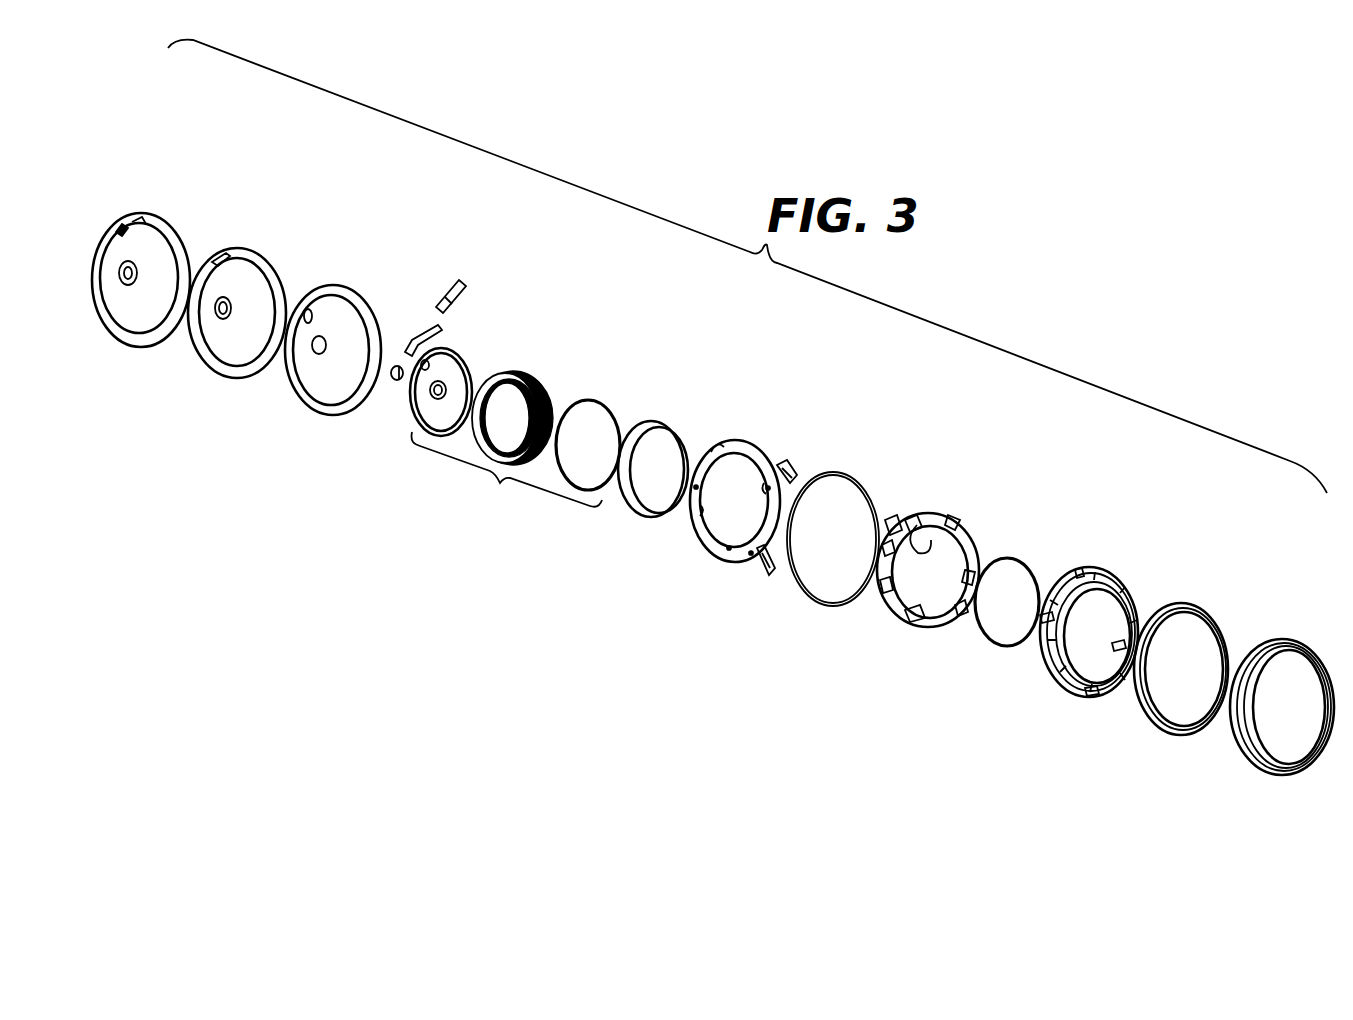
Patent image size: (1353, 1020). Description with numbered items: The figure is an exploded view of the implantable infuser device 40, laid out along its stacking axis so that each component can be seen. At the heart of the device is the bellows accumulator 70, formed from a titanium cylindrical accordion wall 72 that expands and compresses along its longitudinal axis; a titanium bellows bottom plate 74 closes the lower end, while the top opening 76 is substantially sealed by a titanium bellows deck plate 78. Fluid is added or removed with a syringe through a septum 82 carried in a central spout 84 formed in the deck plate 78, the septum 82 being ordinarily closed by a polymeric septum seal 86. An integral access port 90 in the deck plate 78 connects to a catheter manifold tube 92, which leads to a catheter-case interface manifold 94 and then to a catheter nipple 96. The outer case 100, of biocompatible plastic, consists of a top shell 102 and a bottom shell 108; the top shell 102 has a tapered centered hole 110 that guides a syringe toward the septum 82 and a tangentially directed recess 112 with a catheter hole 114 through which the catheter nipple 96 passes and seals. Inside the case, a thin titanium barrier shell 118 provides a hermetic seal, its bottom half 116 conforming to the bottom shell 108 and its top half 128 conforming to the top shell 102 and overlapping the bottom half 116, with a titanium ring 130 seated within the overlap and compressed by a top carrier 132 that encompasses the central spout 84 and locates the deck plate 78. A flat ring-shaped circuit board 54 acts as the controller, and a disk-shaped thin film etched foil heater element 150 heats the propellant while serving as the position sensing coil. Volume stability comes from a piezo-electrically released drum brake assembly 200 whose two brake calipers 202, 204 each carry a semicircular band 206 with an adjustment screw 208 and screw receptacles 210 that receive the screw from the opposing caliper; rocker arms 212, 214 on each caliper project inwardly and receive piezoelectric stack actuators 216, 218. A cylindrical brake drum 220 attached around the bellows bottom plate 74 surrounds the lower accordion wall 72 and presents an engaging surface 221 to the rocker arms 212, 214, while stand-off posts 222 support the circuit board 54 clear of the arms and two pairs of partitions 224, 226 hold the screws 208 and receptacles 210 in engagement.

The infuser device 40 is at (674, 324).
The circuit board 54 is at (703, 553).
The bellows accumulator 70 is at (498, 373).
The cylindrical accordion wall 72 is at (533, 372).
The bellows bottom plate 74 is at (598, 398).
The top opening 76 is at (93, 235).
The bellows deck plate 78 is at (474, 358).
The septum 82 is at (383, 310).
The central spout 84 is at (435, 395).
The septum seal 86 is at (392, 378).
The access port 90 is at (432, 348).
The catheter manifold tube 92 is at (392, 331).
The catheter-case interface manifold 94 is at (420, 327).
The catheter nipple 96 is at (463, 295).
The outer case 100 is at (127, 355).
The top shell 102 is at (183, 232).
The bottom shell 108 is at (1285, 640).
The tapered centered hole 110 is at (128, 258).
The tangentially directed recess 112 is at (140, 217).
The catheter hole 114 is at (122, 230).
The bottom half of thin barrier shell 116 is at (1213, 612).
The thin barrier shell 118 is at (265, 233).
The top half of thin barrier enclosure 128 is at (273, 270).
The titanium ring 130 is at (860, 468).
The top carrier 132 is at (345, 287).
The heater element 150 is at (1035, 572).
The drum brake assembly 200 is at (947, 589).
The brake caliper 202 is at (987, 532).
The brake caliper 204 is at (900, 642).
The semicircular band 206 is at (965, 525).
The adjustment screw 208 is at (907, 523).
The screw receptacle 210 is at (925, 553).
The rocker arm 212 is at (950, 520).
The rocker arm 214 is at (977, 557).
The piezoelectric stack actuator 216 is at (767, 574).
The piezoelectric stack actuator 218 is at (788, 466).
The brake drum 220 is at (672, 423).
The engaging surface 221 is at (670, 517).
The stand-off posts 222 is at (1083, 698).
The partitions 224 is at (1117, 582).
The partitions 226 is at (1106, 692).